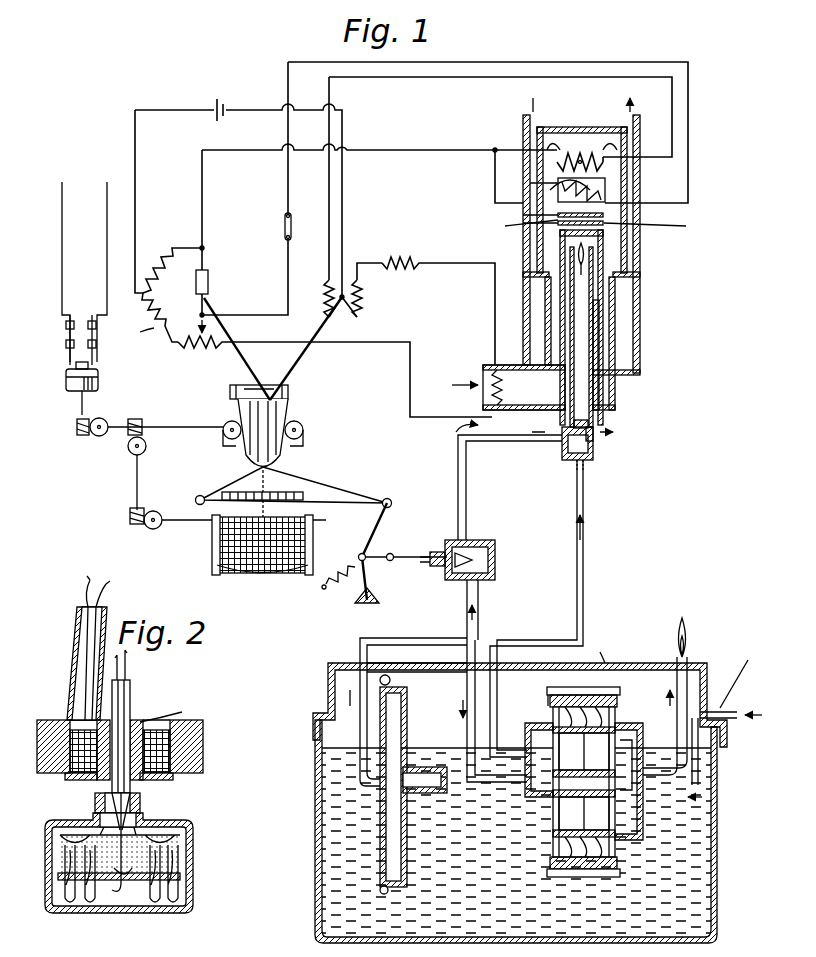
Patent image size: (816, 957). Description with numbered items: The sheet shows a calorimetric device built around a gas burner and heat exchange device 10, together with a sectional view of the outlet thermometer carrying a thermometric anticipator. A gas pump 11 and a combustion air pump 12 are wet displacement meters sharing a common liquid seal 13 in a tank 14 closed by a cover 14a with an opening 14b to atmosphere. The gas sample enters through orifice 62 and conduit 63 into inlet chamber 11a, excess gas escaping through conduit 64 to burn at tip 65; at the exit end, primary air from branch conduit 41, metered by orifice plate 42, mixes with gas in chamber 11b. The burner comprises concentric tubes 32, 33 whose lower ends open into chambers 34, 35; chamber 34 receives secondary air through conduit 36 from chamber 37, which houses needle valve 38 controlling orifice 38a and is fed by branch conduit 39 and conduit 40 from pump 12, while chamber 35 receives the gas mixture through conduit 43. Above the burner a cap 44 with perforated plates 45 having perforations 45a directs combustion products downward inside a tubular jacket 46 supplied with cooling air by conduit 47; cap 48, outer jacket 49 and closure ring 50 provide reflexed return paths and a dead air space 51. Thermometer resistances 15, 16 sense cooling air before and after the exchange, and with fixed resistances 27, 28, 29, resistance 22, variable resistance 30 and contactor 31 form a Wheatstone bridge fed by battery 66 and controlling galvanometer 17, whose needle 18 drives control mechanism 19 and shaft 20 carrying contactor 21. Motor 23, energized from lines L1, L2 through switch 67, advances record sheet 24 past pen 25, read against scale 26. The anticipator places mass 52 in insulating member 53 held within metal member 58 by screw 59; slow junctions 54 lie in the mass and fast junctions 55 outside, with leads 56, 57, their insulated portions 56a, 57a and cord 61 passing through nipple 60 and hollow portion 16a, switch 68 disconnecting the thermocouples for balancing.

In FIG. 1, the gas burner and heat exchange device 10 is at (642, 268).
In FIG. 1, the gas pump 11 is at (524, 826).
In FIG. 1, the inlet chamber 11a is at (625, 727).
In FIG. 1, the discharge chamber 11b is at (538, 725).
In FIG. 1, the combustion air pump 12 is at (412, 825).
In FIG. 1, the liquid seal 13 is at (430, 746).
In FIG. 1, the tank 14 is at (314, 767).
In FIG. 1, the cap or cover 14a is at (328, 690).
In FIG. 1, the opening 14b is at (611, 646).
In FIG. 1, the thermometer resistance 15 is at (486, 371).
In FIG. 1, the thermometer resistance 16 is at (590, 153).
In FIG. 2, the thermometer resistance 16 is at (204, 735).
In FIG. 2, the hollow central portion 16a is at (173, 703).
In FIG. 1, the galvanometer 17 is at (210, 283).
In FIG. 1, the needle 18 is at (244, 360).
In FIG. 1, the control mechanism 19 is at (298, 400).
In FIG. 1, the shaft 20 is at (306, 364).
In FIG. 1, the contactor 21 is at (342, 300).
In FIG. 1, the resistance 22 is at (363, 316).
In FIG. 1, the electric motor 23 is at (100, 378).
In FIG. 1, the recording sheet 24 is at (310, 553).
In FIG. 1, the pen 25 is at (278, 495).
In FIG. 1, the stationary scale 26 is at (242, 495).
In FIG. 1, the fixed resistance 27 is at (400, 259).
In FIG. 1, the fixed resistance 28 is at (134, 331).
In FIG. 1, the fixed resistance 29 is at (157, 260).
In FIG. 1, the variable resistance 30 is at (193, 350).
In FIG. 1, the adjustable contactor 31 is at (169, 334).
In FIG. 1, the outer tube 32 is at (594, 421).
In FIG. 1, the inner tube 33 is at (595, 441).
In FIG. 1, the chamber 34 is at (563, 441).
In FIG. 1, the chamber 35 is at (592, 463).
In FIG. 1, the conduit 36 is at (469, 491).
In FIG. 1, the chamber 37 is at (494, 556).
In FIG. 1, the needle valve 38 is at (428, 572).
In FIG. 1, the variable size orifice 38a is at (478, 545).
In FIG. 1, the branch conduit 39 is at (485, 597).
In FIG. 1, the conduit 40 is at (413, 638).
In FIG. 1, the branch conduit 41 is at (448, 656).
In FIG. 1, the orifice plate 42 is at (470, 680).
In FIG. 1, the conduit 43 is at (584, 590).
In FIG. 1, the cap 44 is at (604, 238).
In FIG. 1, the spaced plates 45 is at (518, 227).
In FIG. 1, the perforations 45a is at (661, 226).
In FIG. 1, the tubular jacket 46 is at (616, 336).
In FIG. 1, the conduit 47 is at (508, 364).
In FIG. 1, the cap 48 is at (575, 148).
In FIG. 1, the tubular jacket 49 is at (541, 124).
In FIG. 1, the closure ring 50 is at (620, 283).
In FIG. 1, the dead air space 51 is at (624, 312).
In FIG. 1, the mass 52 is at (605, 181).
In FIG. 2, the mass 52 is at (194, 838).
In FIG. 2, the cup-shaped insulating member 53 is at (194, 880).
In FIG. 1, the slow junctions 54 is at (530, 183).
In FIG. 2, the slow junctions 54 is at (46, 840).
In FIG. 1, the fast junctions 55 is at (604, 215).
In FIG. 2, the fast junctions 55 is at (95, 900).
In FIG. 1, the wire lead 56 is at (689, 185).
In FIG. 2, the wire lead 56 is at (150, 795).
In FIG. 2, the insulated portion 56a is at (130, 663).
In FIG. 1, the wire lead 57 is at (495, 193).
In FIG. 2, the wire lead 57 is at (145, 798).
In FIG. 2, the insulated portion 57a is at (70, 660).
In FIG. 2, the inverted cup-shaped metal member 58 is at (194, 860).
In FIG. 2, the screw 59 is at (119, 900).
In FIG. 2, the laterally perforated nipple 60 is at (95, 793).
In FIG. 2, the insulated cord 61 is at (131, 700).
In FIG. 1, the orifice 62 is at (716, 712).
In FIG. 1, the conduit 63 is at (744, 674).
In FIG. 1, the conduit 64 is at (690, 668).
In FIG. 1, the tip 65 is at (677, 646).
In FIG. 1, the battery 66 is at (222, 97).
In FIG. 1, the switch 67 is at (62, 331).
In FIG. 1, the switch 68 is at (282, 226).
In FIG. 1, the supply line L1 is at (63, 260).
In FIG. 1, the supply line L2 is at (107, 260).